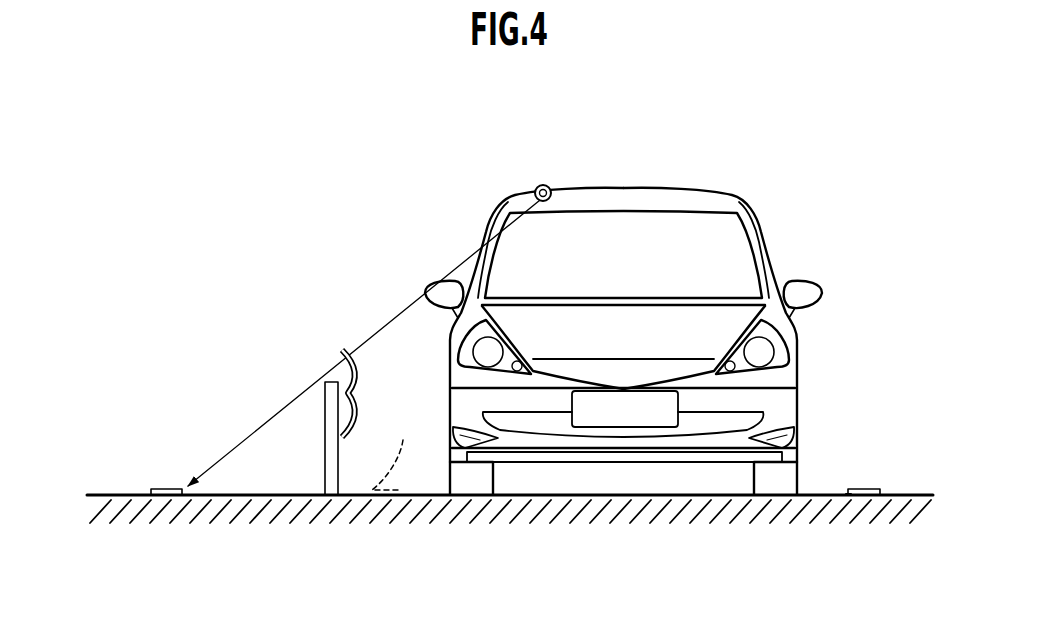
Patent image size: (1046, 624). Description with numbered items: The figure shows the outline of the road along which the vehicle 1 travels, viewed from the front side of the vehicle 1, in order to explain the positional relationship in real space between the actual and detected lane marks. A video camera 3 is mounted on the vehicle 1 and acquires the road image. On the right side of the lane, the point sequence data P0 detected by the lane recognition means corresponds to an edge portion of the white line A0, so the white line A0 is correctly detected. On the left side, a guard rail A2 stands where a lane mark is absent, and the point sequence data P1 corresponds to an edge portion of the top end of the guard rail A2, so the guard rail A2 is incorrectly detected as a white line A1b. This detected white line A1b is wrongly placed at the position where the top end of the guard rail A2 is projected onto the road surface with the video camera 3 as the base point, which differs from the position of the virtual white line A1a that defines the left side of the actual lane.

The vehicle 1 is at (725, 192).
The video camera 3 is at (545, 188).
The point sequence data P1 is at (341, 345).
The guard rail A2 is at (325, 481).
The virtual lane mark A1a is at (401, 442).
The white line A1b is at (162, 487).
The point sequence data P0 is at (849, 483).
The lane mark A0 is at (867, 487).